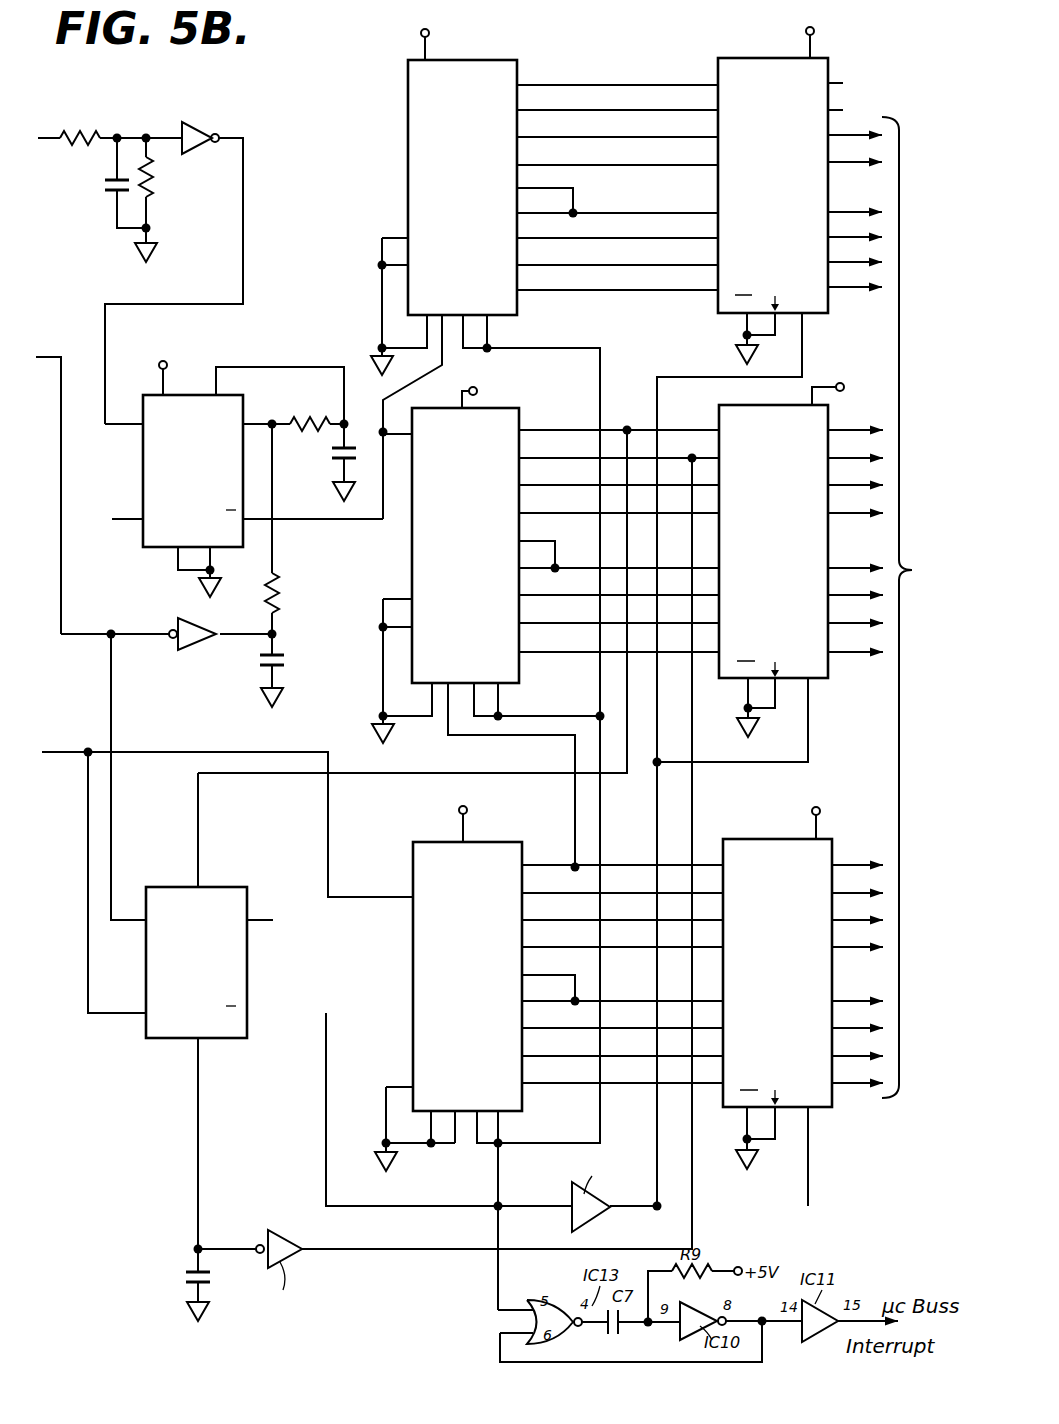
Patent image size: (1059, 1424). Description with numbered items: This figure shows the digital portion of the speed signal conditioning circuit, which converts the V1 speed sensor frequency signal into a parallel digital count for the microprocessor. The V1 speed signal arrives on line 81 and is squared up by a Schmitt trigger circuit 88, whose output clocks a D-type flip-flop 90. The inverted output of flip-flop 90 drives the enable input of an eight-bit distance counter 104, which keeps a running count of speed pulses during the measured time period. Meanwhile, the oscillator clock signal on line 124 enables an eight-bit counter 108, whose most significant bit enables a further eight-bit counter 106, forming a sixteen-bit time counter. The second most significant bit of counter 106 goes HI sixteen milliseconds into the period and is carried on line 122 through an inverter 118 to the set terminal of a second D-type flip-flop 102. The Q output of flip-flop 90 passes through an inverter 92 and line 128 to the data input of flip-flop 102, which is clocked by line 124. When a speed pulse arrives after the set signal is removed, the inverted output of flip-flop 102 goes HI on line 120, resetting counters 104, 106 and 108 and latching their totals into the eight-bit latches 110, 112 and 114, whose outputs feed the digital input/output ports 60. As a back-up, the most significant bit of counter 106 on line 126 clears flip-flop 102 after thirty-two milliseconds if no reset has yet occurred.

The output data lines to digital input/output ports 60 is at (900, 949).
The line 81 is at (48, 138).
The Schmitt trigger circuit 88 is at (193, 192).
The D-type flip-flop 90 is at (143, 521).
The inverter 92 is at (187, 645).
The D-type flip-flop 102 is at (247, 944).
The 8-bit counter 104 is at (408, 128).
The 8-bit counter 106 is at (412, 541).
The 8-bit counter 108 is at (413, 985).
The 8-bit latch 110 is at (737, 58).
The 8-bit latch 112 is at (722, 405).
The 8-bit latch 114 is at (737, 839).
The inverter 118 is at (274, 1233).
The line 120 is at (563, 343).
The line 122 is at (571, 457).
The line 124 is at (172, 752).
The line 126 is at (257, 778).
The line 128 is at (62, 572).